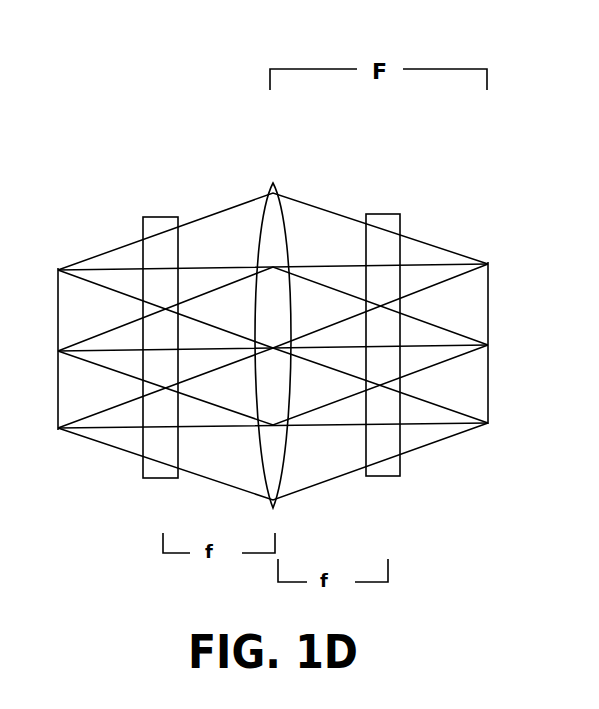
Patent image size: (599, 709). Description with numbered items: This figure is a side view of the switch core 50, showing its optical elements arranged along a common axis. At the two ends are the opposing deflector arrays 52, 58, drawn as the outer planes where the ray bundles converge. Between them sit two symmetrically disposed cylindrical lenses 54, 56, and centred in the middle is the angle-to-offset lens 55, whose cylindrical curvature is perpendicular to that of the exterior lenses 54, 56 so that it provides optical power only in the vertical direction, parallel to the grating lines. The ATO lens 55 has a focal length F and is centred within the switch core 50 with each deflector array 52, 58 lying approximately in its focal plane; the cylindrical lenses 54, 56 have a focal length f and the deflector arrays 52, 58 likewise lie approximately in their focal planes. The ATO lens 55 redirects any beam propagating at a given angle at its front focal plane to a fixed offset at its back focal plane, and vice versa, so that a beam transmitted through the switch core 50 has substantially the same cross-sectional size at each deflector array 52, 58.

The switch core 50 is at (127, 68).
The deflector array 52 is at (488, 264).
The cylindrical lens 54 is at (384, 214).
The angle-to-offset (ATO) lens 55 is at (273, 183).
The cylindrical lens 56 is at (160, 217).
The deflector array 58 is at (58, 268).